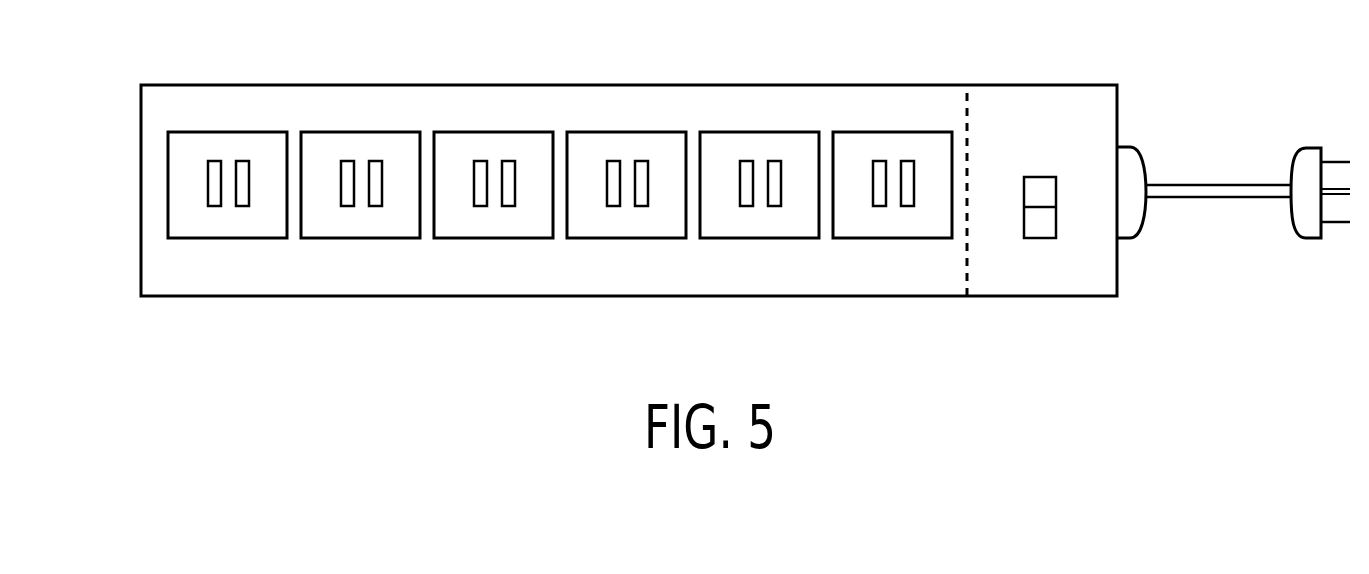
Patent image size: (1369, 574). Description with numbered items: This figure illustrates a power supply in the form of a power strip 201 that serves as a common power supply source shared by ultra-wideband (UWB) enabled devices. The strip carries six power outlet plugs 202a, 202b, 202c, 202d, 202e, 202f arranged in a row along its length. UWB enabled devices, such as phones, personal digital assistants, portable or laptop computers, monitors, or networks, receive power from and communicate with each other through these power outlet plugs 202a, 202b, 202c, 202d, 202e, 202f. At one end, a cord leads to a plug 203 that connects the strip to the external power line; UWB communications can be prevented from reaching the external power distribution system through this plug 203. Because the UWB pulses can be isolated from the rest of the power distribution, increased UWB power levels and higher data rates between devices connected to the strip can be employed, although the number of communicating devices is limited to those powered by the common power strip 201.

The power strip 201 is at (141, 193).
The power outlet plug 202a is at (230, 238).
The power outlet plug 202b is at (363, 238).
The power outlet plug 202c is at (496, 238).
The power outlet plug 202d is at (629, 238).
The power outlet plug 202e is at (762, 238).
The power outlet plug 202f is at (895, 238).
The plug 203 is at (1313, 148).